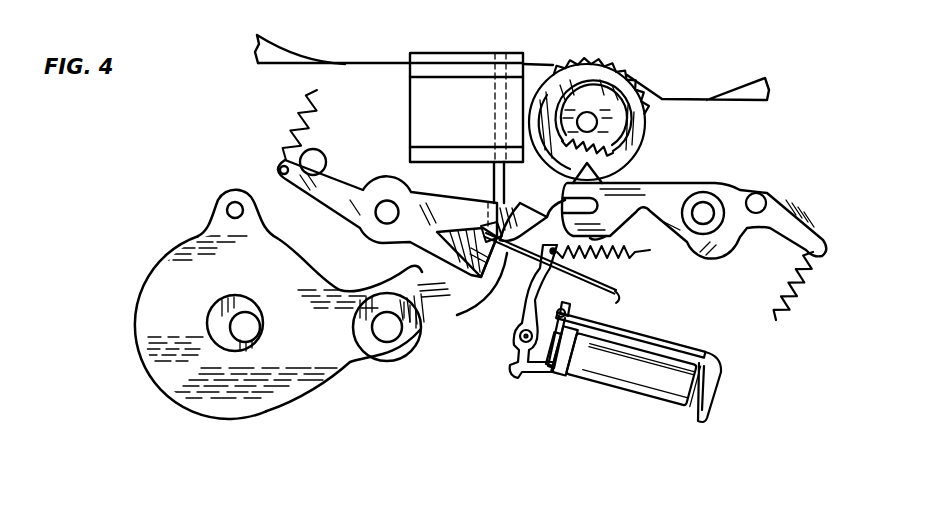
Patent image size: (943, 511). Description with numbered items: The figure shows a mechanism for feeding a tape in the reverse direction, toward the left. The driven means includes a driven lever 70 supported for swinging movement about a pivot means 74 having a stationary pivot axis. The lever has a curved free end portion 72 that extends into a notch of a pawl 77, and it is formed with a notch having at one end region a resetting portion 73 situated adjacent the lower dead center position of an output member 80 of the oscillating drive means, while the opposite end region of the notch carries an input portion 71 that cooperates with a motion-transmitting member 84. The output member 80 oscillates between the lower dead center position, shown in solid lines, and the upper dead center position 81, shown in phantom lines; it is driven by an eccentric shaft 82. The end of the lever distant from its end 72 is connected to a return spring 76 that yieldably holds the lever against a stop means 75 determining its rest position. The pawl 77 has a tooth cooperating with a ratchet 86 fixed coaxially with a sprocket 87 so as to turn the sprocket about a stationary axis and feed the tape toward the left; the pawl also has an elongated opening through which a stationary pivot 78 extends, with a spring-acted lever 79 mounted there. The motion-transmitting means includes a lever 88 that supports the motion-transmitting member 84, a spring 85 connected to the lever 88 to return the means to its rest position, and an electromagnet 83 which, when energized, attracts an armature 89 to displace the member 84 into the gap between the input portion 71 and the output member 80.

The driven lever 70 is at (445, 194).
The input portion 71 is at (550, 205).
The curved free end portion 72 is at (553, 251).
The resetting portion 73 is at (480, 300).
The pivot means 74 is at (387, 200).
The stop means 75 is at (320, 152).
The return spring 76 is at (286, 125).
The pawl 77 is at (700, 183).
The stationary pivot 78 is at (705, 213).
The lever 79 is at (773, 200).
The output member 80 is at (500, 263).
The upper dead center position 81 is at (488, 212).
The eccentric shaft 82 is at (235, 325).
The electromagnet 83 is at (670, 387).
The motion-transmitting member 84 is at (614, 296).
The spring 85 is at (632, 254).
The ratchet 86 is at (610, 145).
The sprocket 87 is at (627, 75).
The lever 88 is at (523, 310).
The armature 89 is at (587, 363).